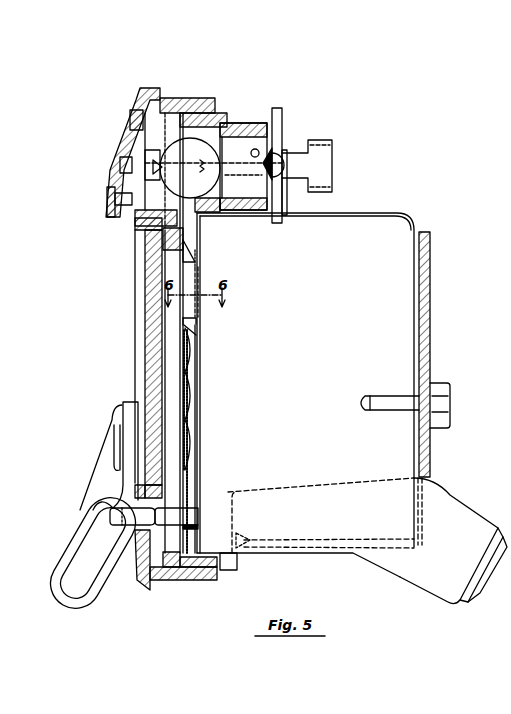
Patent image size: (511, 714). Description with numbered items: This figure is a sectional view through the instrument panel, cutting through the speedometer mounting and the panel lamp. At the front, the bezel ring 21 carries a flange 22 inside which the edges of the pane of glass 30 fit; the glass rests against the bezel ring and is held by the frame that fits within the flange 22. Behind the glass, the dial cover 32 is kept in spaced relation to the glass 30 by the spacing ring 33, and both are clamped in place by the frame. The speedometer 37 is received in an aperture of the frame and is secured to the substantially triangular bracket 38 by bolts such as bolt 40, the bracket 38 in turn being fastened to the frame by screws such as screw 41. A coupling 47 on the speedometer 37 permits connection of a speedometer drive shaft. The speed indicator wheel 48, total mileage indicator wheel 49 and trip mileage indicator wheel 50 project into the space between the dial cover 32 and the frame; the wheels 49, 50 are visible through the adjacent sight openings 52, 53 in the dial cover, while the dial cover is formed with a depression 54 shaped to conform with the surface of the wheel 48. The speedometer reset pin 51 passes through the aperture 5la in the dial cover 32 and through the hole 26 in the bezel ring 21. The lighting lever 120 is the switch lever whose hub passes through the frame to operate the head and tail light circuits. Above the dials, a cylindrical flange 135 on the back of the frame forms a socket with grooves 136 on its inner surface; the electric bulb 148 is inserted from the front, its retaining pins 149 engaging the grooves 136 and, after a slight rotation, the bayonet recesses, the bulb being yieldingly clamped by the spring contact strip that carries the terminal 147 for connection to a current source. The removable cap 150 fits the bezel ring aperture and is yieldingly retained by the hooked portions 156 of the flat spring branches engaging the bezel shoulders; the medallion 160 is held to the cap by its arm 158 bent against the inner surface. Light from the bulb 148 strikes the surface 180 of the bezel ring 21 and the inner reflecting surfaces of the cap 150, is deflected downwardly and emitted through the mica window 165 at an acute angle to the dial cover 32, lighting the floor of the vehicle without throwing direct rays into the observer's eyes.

The bezel ring 21 is at (140, 590).
The flange 22 is at (190, 580).
The hole 26 is at (147, 593).
The pane of glass 30 is at (145, 345).
The dial cover 32 is at (187, 412).
The spacing ring 33 is at (183, 250).
The speedometer 37 is at (395, 230).
The bracket 38 is at (433, 325).
The bolt 40 is at (450, 401).
The screw 41 is at (248, 536).
The coupling 47 is at (468, 505).
The speed indicator wheel 48 is at (221, 288).
The total mileage indicator wheel 49 is at (200, 363).
The trip mileage indicator wheel 50 is at (198, 452).
The speedometer reset pin 51 is at (188, 508).
The aperture 5la is at (202, 519).
The sight opening 52 is at (190, 372).
The sight opening 53 is at (188, 442).
The depression 54 is at (200, 320).
The lighting lever 120 is at (72, 595).
The cylindrical flange 135 is at (243, 123).
The grooves 136 is at (240, 167).
The terminal 147 is at (322, 162).
The electric bulb 148 is at (217, 140).
The retaining pins 149 is at (255, 152).
The removable cap 150 is at (130, 123).
The hooked portions 156 is at (183, 98).
The arm 158 is at (133, 133).
The medallion 160 is at (115, 162).
The mica window 165 is at (118, 217).
The surface 180 is at (157, 117).